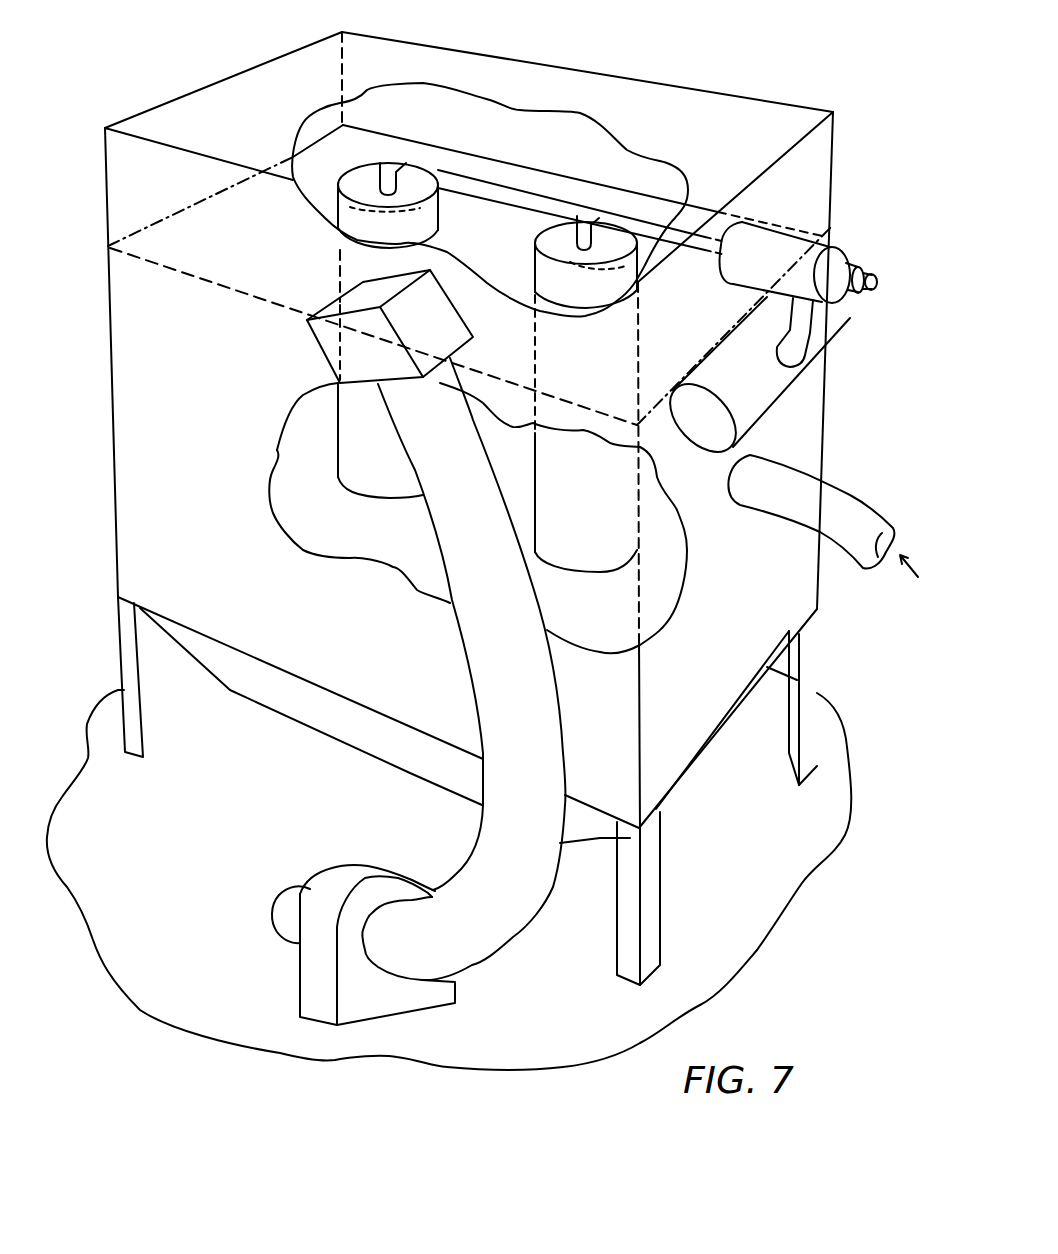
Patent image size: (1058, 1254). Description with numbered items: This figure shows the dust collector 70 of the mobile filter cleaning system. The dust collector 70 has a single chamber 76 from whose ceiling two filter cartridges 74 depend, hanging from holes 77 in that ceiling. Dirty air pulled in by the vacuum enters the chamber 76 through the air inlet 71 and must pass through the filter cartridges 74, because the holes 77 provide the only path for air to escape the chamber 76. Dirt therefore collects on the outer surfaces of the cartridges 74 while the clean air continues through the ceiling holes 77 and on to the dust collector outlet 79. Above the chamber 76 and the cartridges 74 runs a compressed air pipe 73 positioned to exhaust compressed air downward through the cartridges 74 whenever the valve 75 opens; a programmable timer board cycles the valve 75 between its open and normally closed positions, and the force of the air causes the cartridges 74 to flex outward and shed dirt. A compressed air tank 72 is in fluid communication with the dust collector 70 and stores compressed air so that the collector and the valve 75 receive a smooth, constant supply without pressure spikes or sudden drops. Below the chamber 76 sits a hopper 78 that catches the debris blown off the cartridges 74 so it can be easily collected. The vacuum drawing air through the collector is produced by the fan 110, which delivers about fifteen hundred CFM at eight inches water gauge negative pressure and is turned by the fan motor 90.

The dust collector 70 is at (698, 62).
The air inlet 71 is at (777, 473).
The compressed air tank 72 is at (760, 383).
The compressed air pipe 73 is at (520, 197).
The filter cartridges 74 is at (338, 465).
The valve 75 is at (863, 267).
The chamber 76 is at (214, 353).
The holes 77 is at (353, 200).
The hopper 78 is at (337, 717).
The dust collector outlet 79 is at (453, 535).
The fan motor 90 is at (286, 890).
The fan 110 is at (315, 970).